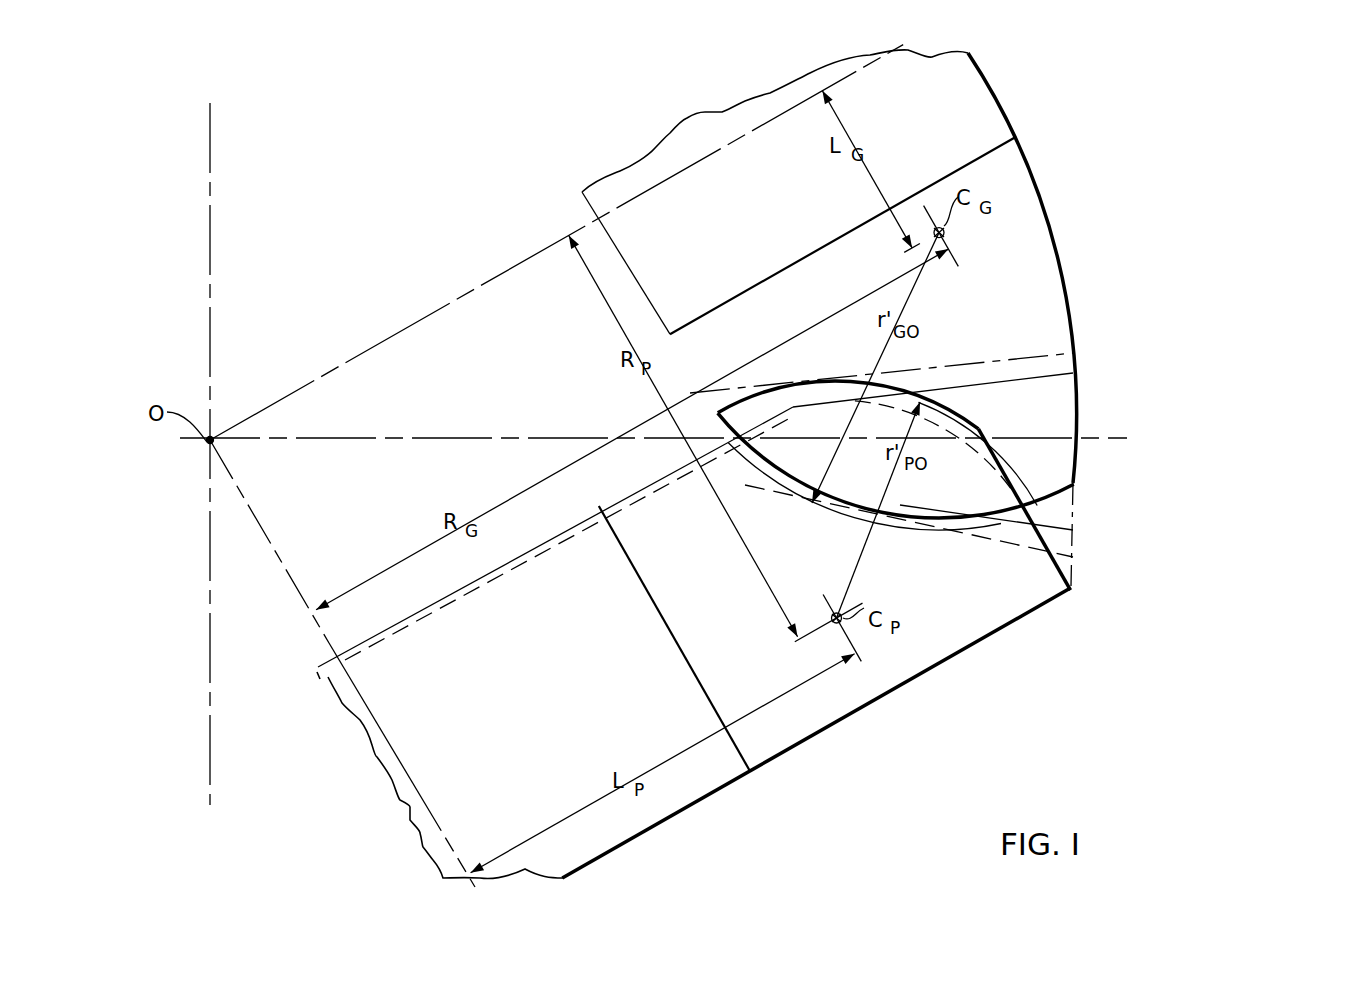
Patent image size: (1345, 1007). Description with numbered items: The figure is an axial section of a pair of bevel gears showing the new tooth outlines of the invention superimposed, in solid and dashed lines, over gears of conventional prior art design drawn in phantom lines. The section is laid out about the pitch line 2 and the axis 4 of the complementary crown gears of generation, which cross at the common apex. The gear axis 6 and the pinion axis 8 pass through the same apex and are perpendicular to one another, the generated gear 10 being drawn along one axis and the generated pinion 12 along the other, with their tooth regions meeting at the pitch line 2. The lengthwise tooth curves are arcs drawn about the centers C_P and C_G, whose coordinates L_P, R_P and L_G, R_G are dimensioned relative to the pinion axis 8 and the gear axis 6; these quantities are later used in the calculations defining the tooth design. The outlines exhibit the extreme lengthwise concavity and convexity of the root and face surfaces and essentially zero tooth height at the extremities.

The pitch line 2 is at (1082, 437).
The crown gear axis 4 is at (212, 743).
The gear axis 6 is at (357, 683).
The pinion axis 8 is at (623, 205).
The gear 10 is at (686, 793).
The pinion 12 is at (747, 117).